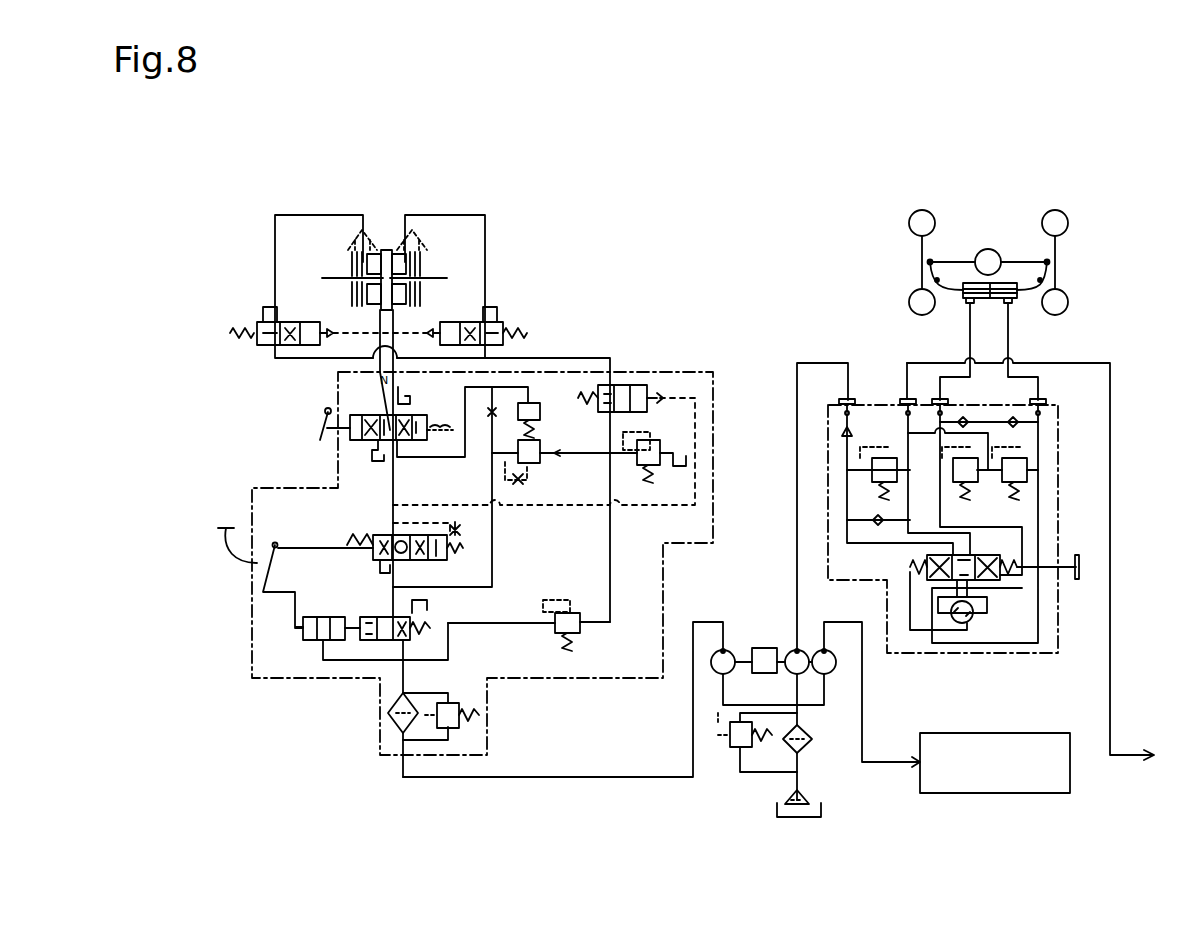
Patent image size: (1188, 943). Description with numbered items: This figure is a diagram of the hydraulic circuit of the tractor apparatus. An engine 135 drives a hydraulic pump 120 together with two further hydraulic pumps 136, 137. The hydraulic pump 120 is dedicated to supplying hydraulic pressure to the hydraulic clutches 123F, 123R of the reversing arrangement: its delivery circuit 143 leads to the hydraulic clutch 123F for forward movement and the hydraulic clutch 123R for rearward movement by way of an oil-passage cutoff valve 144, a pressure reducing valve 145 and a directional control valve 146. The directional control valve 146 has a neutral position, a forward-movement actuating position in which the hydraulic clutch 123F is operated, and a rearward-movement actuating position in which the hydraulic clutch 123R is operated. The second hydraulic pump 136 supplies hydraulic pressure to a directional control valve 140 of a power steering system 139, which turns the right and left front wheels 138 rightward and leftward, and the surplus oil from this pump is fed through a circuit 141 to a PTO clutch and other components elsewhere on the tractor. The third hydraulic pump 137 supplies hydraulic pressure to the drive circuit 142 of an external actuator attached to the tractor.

The hydraulic clutch for rearward movement 123R is at (352, 258).
The hydraulic clutch for forward movement 123F is at (417, 258).
The directional control valve 146 is at (430, 420).
The pressure reducing valve 145 is at (447, 560).
The oil-passage cutoff valve 144 is at (360, 617).
The hydraulic pump 120 is at (723, 650).
The engine 135 is at (764, 648).
The hydraulic pump 136 is at (797, 650).
The hydraulic pump 137 is at (835, 667).
The front wheels 138 is at (910, 223).
The power steering system 139 is at (1003, 508).
The directional control valve 140 is at (1000, 557).
The circuit 141 is at (1110, 668).
The drive circuit 142 is at (1023, 745).
The delivery circuit 143 is at (608, 777).